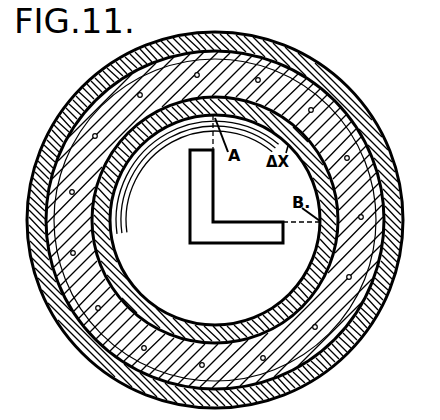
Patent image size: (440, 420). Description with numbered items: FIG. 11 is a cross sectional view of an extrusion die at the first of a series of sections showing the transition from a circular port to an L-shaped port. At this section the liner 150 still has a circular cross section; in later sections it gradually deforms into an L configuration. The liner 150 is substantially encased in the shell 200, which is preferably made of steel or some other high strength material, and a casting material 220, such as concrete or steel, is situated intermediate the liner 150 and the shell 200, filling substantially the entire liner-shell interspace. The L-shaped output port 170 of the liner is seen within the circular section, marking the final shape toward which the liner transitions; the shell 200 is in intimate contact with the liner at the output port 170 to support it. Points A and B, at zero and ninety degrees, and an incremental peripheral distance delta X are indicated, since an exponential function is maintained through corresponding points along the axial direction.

The liner 150 is at (194, 327).
The output port 170 is at (190, 229).
The shell 200 is at (331, 84).
The material 220 is at (339, 318).